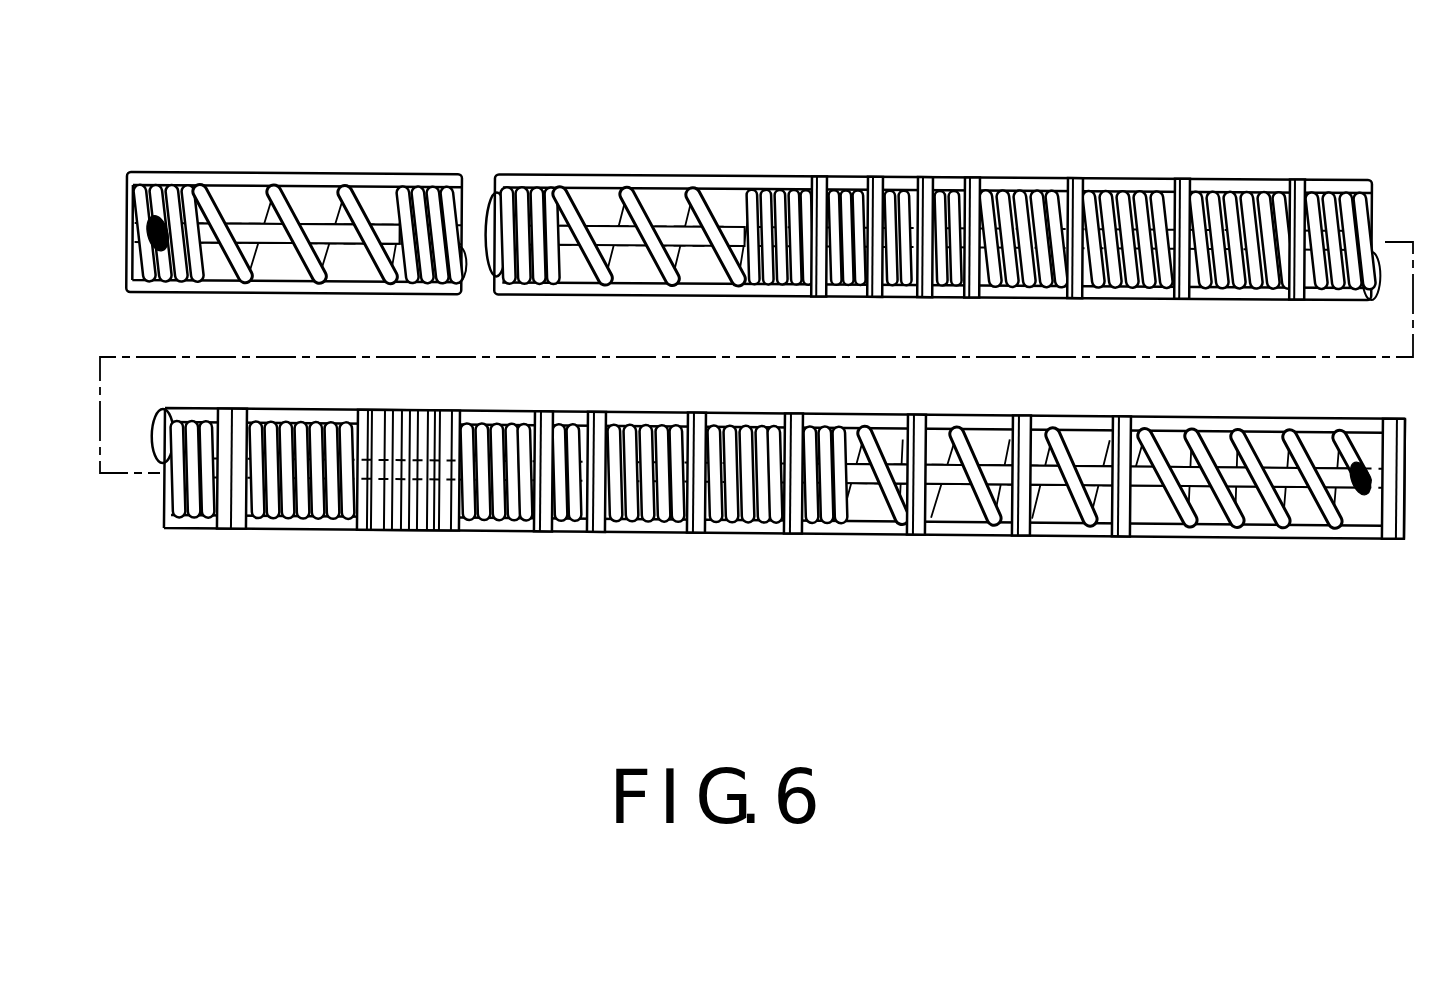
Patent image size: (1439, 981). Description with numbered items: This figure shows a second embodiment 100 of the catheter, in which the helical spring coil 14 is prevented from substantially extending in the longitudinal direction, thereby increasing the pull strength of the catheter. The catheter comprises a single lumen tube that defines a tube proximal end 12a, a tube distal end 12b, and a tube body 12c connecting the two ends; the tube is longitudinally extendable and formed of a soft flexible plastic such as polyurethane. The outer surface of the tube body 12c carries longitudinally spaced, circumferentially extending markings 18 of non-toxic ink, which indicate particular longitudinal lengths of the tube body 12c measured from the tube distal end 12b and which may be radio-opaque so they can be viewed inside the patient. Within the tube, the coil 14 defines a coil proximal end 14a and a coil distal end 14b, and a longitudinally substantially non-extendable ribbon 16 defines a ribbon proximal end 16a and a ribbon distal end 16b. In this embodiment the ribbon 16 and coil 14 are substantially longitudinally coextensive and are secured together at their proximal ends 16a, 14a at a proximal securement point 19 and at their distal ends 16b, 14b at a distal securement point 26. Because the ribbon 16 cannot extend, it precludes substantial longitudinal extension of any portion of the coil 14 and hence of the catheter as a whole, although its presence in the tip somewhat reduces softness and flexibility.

The tube proximal end 12a is at (127, 180).
The coil proximal end 14a is at (190, 192).
The ribbon proximal end 16a is at (298, 165).
The proximal securement point 19 is at (150, 236).
The second embodiment of the catheter 100 is at (471, 173).
The markings 18 is at (970, 180).
The tube distal end 12b is at (1408, 430).
The tube body 12c is at (200, 530).
The coil 14 is at (282, 503).
The ribbon 16 is at (342, 527).
The coil distal end 14b is at (1347, 470).
The ribbon distal end 16b is at (1255, 545).
The distal securement point 26 is at (1358, 495).